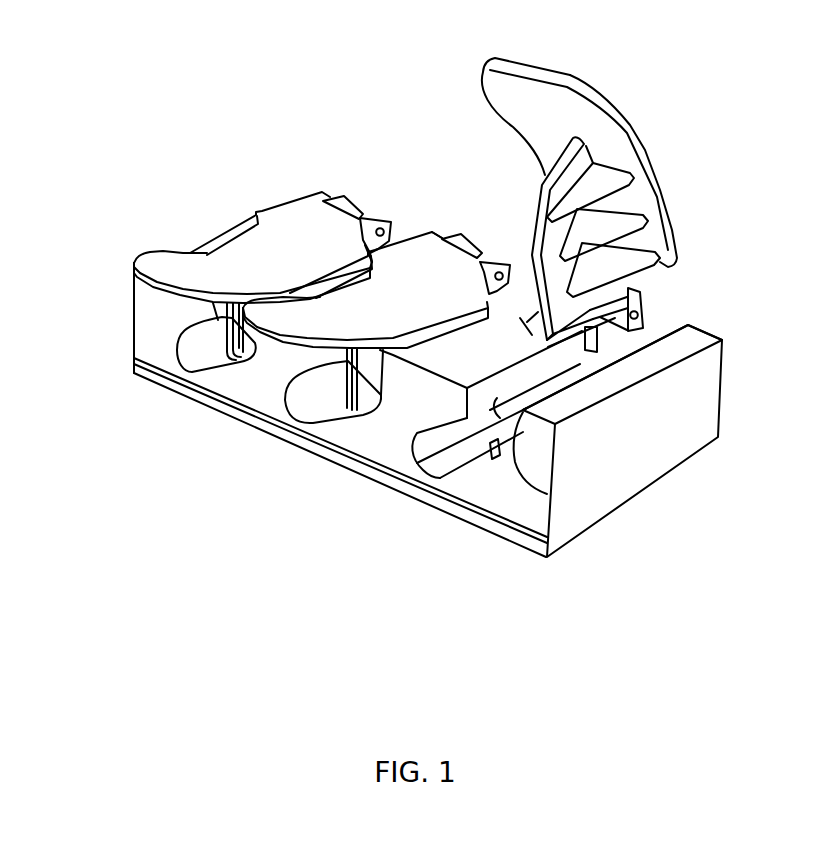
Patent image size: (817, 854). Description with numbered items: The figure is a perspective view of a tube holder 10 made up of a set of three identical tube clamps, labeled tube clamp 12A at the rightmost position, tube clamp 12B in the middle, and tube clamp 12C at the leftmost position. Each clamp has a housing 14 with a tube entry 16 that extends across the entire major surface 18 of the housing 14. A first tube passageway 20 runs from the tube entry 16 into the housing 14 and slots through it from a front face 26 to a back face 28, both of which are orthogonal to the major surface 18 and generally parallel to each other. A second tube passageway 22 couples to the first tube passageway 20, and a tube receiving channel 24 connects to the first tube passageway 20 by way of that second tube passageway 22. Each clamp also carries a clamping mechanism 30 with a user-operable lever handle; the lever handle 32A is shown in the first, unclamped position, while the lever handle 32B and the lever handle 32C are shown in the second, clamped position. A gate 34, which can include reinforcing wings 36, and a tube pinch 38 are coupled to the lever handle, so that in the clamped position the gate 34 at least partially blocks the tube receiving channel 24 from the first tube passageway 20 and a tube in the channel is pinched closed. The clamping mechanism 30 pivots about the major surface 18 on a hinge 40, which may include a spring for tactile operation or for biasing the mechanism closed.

The tube holder 10 is at (105, 74).
The tube clamp 12A is at (398, 528).
The tube clamp 12B is at (257, 457).
The tube clamp 12C is at (143, 403).
The housing 14 is at (708, 388).
The tube entry 16 is at (668, 322).
The major surface 18 is at (700, 340).
The first tube passageway 20 is at (547, 494).
The second tube passageway 22 is at (473, 450).
The tube receiving channel 24 is at (437, 470).
The front face 26 is at (547, 487).
The back face 28 is at (446, 218).
The clamping mechanism 30 is at (242, 207).
The lever handle 32A is at (597, 94).
The lever handle 32B is at (307, 323).
The lever handle 32C is at (142, 263).
The gate 34 is at (537, 195).
The wings 36 is at (605, 183).
The tube pinch 38 is at (523, 320).
The hinge 40 is at (350, 200).